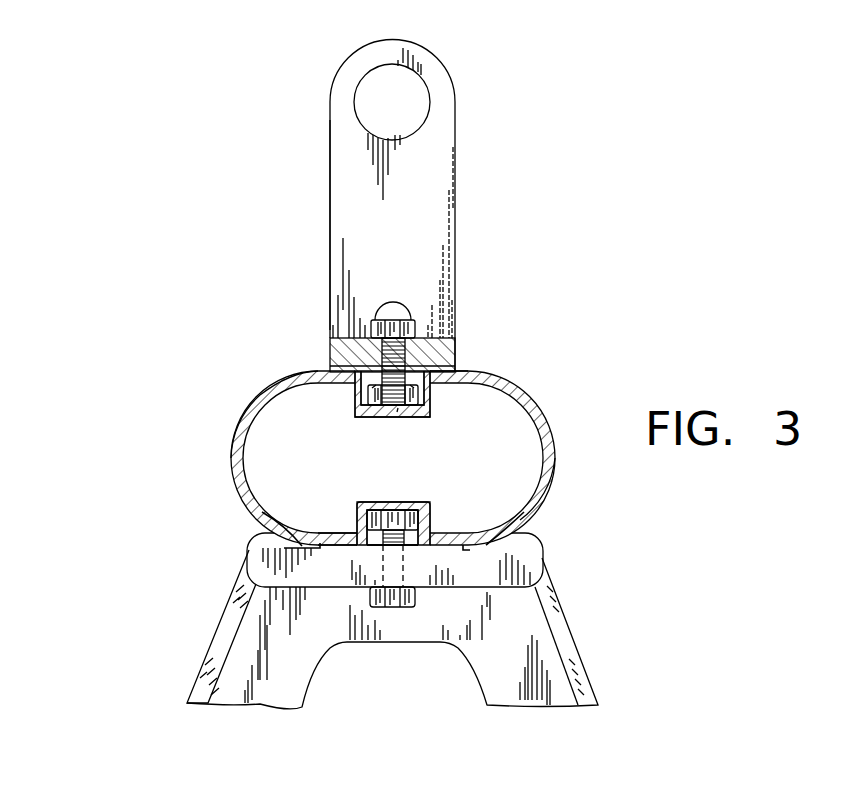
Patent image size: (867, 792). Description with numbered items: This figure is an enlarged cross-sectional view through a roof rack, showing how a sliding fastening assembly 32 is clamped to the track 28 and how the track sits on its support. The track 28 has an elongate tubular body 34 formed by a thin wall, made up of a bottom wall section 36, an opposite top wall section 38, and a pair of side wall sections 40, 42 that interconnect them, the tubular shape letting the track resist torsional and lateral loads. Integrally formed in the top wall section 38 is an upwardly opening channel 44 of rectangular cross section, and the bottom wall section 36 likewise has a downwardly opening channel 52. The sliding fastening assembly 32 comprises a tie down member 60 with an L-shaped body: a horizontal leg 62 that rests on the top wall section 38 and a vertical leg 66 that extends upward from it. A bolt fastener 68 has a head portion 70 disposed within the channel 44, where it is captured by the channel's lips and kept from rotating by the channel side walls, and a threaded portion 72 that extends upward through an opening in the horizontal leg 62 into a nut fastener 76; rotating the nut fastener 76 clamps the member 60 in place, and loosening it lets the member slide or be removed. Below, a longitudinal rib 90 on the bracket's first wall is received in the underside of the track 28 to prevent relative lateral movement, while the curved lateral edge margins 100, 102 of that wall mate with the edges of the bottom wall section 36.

The track 28 is at (546, 396).
The sliding fastening assembly 32 is at (470, 70).
The tubular body 34 is at (243, 415).
The bottom wall section 36 is at (336, 533).
The top wall section 38 is at (462, 372).
The side wall section 40 is at (238, 470).
The side wall section 42 is at (555, 460).
The upwardly opening channel 44 is at (385, 410).
The downwardly opening channel 52 is at (415, 502).
The member 60 is at (460, 183).
The horizontal leg 62 is at (330, 350).
The vertical leg 66 is at (352, 202).
The bolt fastener 68 is at (330, 366).
The head portion 70 is at (398, 410).
The threaded portion 72 is at (466, 355).
The nut fastener 76 is at (393, 305).
The longitudinal rib 90 is at (358, 543).
The lateral edge margin 100 is at (262, 513).
The lateral edge margin 102 is at (547, 512).